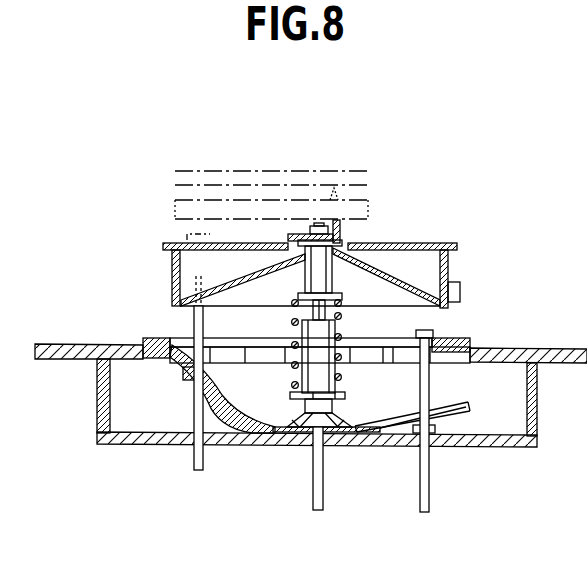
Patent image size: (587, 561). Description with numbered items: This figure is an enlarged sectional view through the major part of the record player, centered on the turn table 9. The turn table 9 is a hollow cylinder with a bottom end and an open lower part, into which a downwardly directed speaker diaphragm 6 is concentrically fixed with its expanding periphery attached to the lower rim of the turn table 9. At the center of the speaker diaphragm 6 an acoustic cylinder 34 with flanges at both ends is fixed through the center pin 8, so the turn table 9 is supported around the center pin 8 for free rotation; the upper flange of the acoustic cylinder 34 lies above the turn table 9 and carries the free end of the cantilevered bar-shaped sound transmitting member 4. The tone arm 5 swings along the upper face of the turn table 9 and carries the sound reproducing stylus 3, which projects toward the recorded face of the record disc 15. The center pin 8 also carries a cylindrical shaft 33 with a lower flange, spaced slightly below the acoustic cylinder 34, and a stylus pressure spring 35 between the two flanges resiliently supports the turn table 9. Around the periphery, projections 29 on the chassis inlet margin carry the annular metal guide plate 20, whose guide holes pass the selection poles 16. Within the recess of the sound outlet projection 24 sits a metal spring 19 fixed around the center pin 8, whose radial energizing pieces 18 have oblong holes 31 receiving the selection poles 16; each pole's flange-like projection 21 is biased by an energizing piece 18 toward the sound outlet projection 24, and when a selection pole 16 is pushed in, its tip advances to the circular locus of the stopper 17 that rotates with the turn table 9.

The sound reproducing stylus 3 is at (336, 199).
The sound transmitting member 4 is at (343, 233).
The tone arm 5 is at (368, 202).
The speaker diaphragm 6 is at (418, 283).
The center pin 8 is at (343, 312).
The turn table 9 is at (457, 243).
The record disc 15 is at (247, 170).
The selection pole 16 is at (208, 463).
The stopper 17 is at (460, 300).
The energizing piece 18 is at (207, 392).
The metal spring 19 is at (356, 444).
The metal guide plate 20 is at (152, 342).
The flange-like projection 21 is at (183, 377).
The sound outlet projection 24 is at (122, 445).
The projections 29 is at (268, 355).
The oblong hole 31 is at (445, 403).
The cylindrical shaft 33 is at (345, 368).
The acoustic cylinder 34 is at (334, 280).
The stylus pressure spring 35 is at (296, 322).